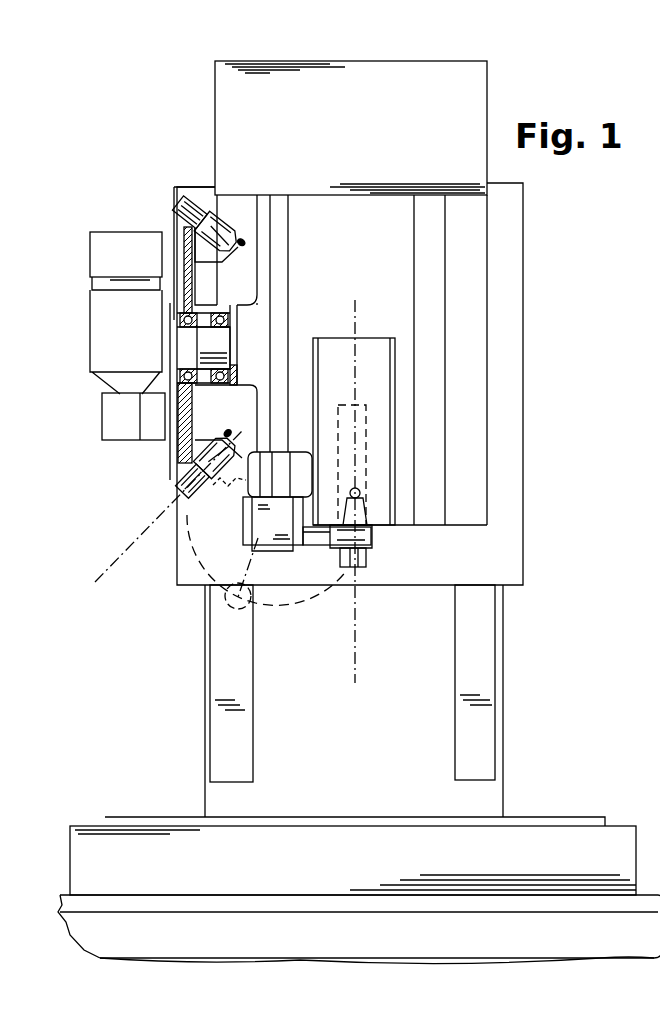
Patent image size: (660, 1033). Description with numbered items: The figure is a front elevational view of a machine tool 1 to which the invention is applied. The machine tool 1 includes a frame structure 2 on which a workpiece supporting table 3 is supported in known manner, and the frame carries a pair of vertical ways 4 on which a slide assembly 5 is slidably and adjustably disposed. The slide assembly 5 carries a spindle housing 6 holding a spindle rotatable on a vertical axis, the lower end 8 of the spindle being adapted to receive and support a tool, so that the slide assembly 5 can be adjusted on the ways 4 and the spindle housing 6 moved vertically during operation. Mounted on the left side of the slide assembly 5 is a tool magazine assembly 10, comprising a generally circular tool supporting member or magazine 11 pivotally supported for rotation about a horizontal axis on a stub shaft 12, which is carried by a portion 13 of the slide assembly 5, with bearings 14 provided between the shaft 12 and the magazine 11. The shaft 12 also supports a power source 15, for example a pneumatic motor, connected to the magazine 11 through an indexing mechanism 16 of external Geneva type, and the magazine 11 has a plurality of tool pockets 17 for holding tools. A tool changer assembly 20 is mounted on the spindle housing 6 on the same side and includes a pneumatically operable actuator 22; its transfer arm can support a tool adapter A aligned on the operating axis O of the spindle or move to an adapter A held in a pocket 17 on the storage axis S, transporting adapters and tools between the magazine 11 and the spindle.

The machine tool 1 is at (535, 499).
The frame structure 2 is at (500, 643).
The workpiece supporting table 3 is at (545, 815).
The vertical ways 4 is at (220, 697).
The slide assembly 5 is at (421, 577).
The spindle housing 6 is at (385, 413).
The lower end of spindle 8 is at (372, 530).
The tool magazine assembly 10 is at (143, 223).
The tool supporting member (magazine) 11 is at (197, 290).
The stub shaft 12 is at (215, 340).
The portion of slide assembly 13 is at (255, 325).
The bearings 14 is at (185, 327).
The power source (motor) 15 is at (105, 365).
The indexing mechanism 16 is at (152, 430).
The tool pockets 17 is at (228, 222).
The tool changer assembly 20 is at (279, 560).
The actuator (motor) 22 is at (275, 508).
The tool adapter A is at (175, 488).
The storage axis S is at (123, 562).
The operating axis O is at (358, 645).